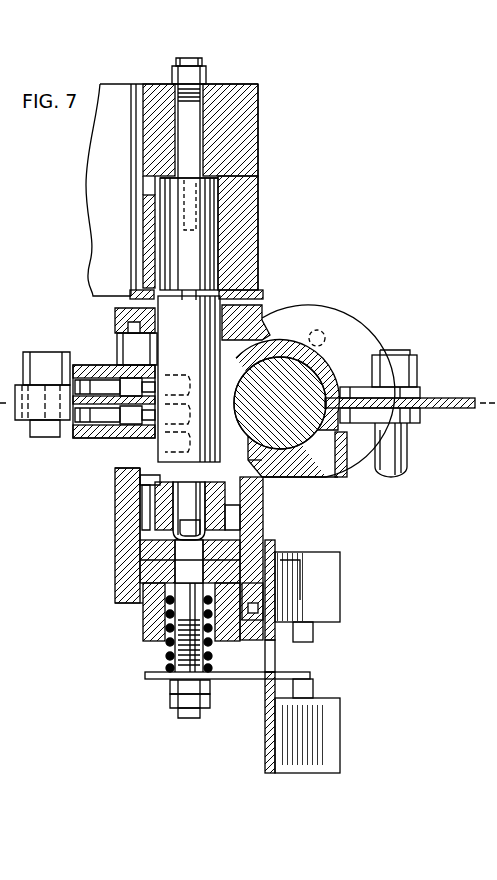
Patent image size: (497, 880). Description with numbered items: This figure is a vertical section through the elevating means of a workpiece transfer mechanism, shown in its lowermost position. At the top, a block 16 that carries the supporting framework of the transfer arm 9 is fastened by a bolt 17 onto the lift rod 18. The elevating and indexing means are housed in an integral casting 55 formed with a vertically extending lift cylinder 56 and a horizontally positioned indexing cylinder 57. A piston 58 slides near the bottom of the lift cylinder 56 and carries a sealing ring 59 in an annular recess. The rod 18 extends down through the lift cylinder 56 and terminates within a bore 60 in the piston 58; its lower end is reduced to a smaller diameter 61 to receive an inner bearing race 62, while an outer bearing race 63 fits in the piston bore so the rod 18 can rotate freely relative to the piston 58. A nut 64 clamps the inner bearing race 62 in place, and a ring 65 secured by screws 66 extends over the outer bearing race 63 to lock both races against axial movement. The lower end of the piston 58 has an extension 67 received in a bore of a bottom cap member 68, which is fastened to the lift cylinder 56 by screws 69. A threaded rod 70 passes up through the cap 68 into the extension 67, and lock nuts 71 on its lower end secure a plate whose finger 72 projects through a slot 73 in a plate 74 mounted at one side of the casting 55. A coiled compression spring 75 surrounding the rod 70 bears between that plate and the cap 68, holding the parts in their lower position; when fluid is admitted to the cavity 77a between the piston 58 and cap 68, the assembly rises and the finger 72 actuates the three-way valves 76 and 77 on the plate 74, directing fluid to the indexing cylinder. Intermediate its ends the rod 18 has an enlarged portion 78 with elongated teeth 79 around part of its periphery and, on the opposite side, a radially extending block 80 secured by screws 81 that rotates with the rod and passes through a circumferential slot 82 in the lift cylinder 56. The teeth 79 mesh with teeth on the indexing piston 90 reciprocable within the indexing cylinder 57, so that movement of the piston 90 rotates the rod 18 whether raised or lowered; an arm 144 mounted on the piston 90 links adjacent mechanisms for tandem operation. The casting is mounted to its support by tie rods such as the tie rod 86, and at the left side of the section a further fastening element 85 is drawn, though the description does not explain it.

The arm 9 is at (90, 218).
The block 16 is at (242, 150).
The bolt 17 is at (202, 123).
The lift rod 18 is at (208, 248).
The casting member 55 is at (272, 300).
The lift cylinder 56 is at (124, 492).
The indexing cylinder 57 is at (332, 360).
The piston 58 is at (256, 520).
The sealing ring 59 is at (256, 537).
The bore 60 is at (178, 533).
The smaller diameter portion 61 is at (185, 523).
The inner bearing race 62 is at (236, 488).
The outer bearing race 63 is at (258, 483).
The nut 64 is at (150, 556).
The ring 65 is at (240, 470).
The screws 66 is at (122, 478).
The extension 67 is at (116, 599).
The bottom cap member 68 is at (143, 617).
The screws 69 is at (258, 608).
The threaded rod 70 is at (168, 636).
The lock nuts 71 is at (170, 697).
The finger 72 is at (234, 679).
The slot 73 is at (272, 655).
The plate 74 is at (265, 735).
The coiled compression spring 75 is at (160, 660).
The three-way valve 76 is at (313, 728).
The three-way valve 77 is at (338, 575).
The cavity 77a is at (290, 563).
The enlarged portion 78 is at (200, 377).
The elongated teeth 79 is at (243, 399).
The block 80 is at (92, 365).
The screws 81 is at (114, 424).
The circumferential slot 82 is at (118, 336).
The adjusting nut 85 is at (40, 440).
The tie rod 86 is at (407, 467).
The piston 90 is at (340, 387).
The arm 144 is at (447, 410).